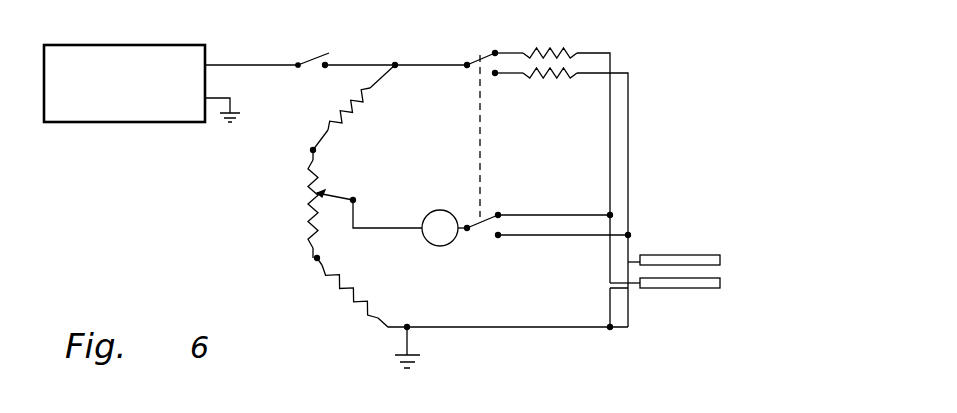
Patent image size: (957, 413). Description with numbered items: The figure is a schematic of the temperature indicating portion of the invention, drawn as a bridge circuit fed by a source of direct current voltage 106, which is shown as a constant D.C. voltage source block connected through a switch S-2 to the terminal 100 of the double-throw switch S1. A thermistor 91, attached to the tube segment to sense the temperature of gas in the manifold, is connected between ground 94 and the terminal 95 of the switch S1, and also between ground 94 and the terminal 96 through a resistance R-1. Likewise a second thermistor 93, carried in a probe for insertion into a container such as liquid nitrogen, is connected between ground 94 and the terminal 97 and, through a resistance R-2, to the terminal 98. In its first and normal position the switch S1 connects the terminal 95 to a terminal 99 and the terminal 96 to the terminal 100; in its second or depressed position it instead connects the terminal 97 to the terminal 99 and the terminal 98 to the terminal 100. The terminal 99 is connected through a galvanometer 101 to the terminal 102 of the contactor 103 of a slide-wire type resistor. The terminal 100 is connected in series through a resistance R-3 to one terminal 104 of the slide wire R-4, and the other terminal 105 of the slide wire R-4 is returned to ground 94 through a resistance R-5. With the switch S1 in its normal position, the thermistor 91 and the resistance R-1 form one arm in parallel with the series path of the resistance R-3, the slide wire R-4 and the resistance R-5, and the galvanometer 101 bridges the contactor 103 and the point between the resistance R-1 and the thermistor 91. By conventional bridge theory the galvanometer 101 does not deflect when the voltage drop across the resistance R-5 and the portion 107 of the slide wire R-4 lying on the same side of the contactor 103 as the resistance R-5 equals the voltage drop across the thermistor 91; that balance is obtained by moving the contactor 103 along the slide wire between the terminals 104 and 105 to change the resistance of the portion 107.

The source of direct current voltage 106 is at (184, 42).
The switch S-2 is at (330, 57).
The terminal 100 is at (465, 60).
The switch S1 is at (470, 70).
The terminal 96 is at (497, 50).
The terminal 98 is at (496, 76).
The resistance R-1 is at (562, 48).
The resistance R-2 is at (552, 78).
The resistance R-3 is at (348, 125).
The terminal 104 is at (310, 152).
The slide wire R-4 is at (302, 192).
The contactor 103 is at (333, 194).
The terminal 102 is at (356, 202).
The portion of the slide wire 107 is at (310, 226).
The terminal 105 is at (314, 260).
The galvanometer 101 is at (427, 242).
The terminal 99 is at (467, 232).
The terminal 95 is at (500, 212).
The terminal 97 is at (498, 238).
The resistance R-5 is at (345, 310).
The ground 94 is at (418, 362).
The second thermistor 93 is at (690, 253).
The thermistor 91 is at (680, 290).